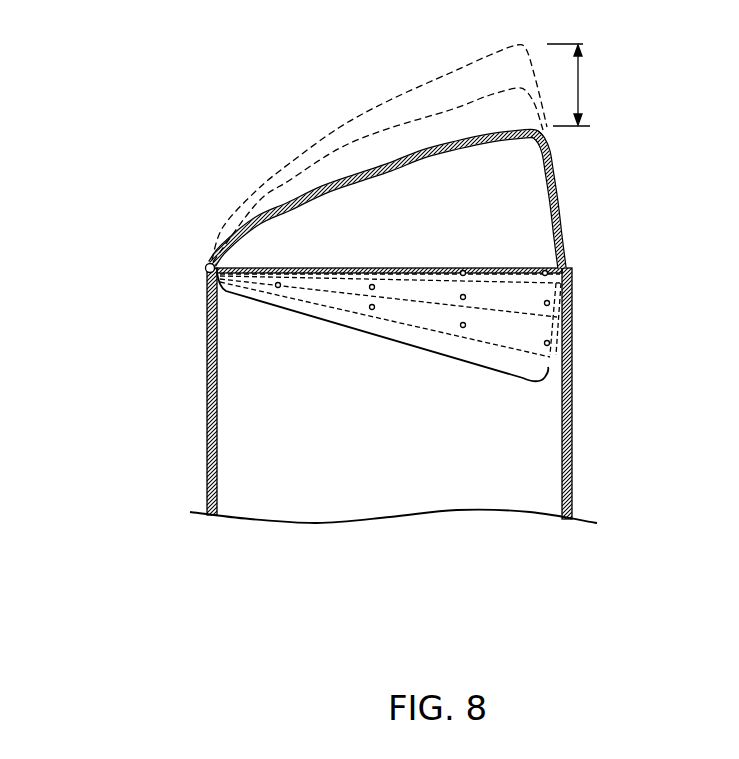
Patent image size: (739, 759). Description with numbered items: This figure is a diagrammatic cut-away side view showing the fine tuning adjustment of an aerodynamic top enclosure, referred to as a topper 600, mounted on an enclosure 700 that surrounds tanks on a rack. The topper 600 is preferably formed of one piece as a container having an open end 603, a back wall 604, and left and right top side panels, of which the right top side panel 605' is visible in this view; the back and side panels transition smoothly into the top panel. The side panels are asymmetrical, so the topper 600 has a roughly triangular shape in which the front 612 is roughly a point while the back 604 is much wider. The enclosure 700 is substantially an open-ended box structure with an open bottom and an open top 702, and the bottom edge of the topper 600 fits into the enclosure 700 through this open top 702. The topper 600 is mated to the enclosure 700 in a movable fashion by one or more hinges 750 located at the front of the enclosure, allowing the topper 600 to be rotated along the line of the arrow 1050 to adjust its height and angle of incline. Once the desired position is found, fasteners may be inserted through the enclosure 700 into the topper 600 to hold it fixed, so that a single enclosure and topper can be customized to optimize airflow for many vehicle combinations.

The enclosure 700 is at (122, 355).
The hinge 750 is at (203, 266).
The front of the topper 612 is at (226, 186).
The topper 600 is at (445, 201).
The back wall 604 is at (567, 237).
The right top side panel 605' is at (376, 198).
The arrow 1050 is at (580, 82).
The open top 702 is at (323, 266).
The open end 603 is at (364, 335).